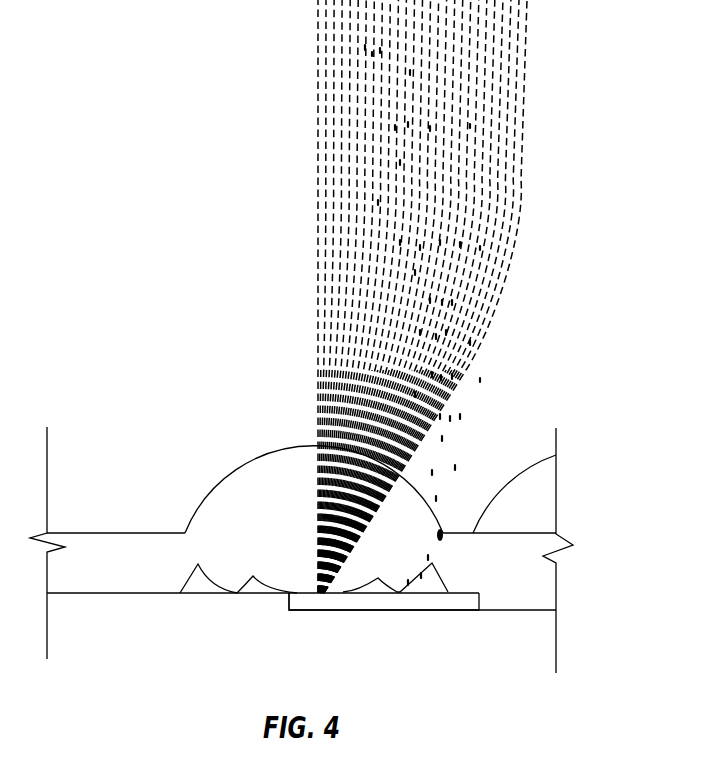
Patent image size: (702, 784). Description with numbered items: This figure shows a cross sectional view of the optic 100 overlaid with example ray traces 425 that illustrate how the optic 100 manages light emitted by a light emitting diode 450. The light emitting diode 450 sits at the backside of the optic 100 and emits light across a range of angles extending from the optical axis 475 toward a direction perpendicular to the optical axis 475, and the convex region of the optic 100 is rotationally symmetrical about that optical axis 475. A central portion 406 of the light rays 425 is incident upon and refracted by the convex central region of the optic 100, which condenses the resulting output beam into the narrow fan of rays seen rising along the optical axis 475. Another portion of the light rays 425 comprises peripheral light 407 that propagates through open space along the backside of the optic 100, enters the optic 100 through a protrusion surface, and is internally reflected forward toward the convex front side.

The optic 100 is at (198, 502).
The central portion of the light rays 406 is at (305, 500).
The peripheral light 407 is at (399, 600).
The ray traces 425 is at (520, 117).
The light emitting diode 450 is at (320, 600).
The optical axis 475 is at (317, 81).